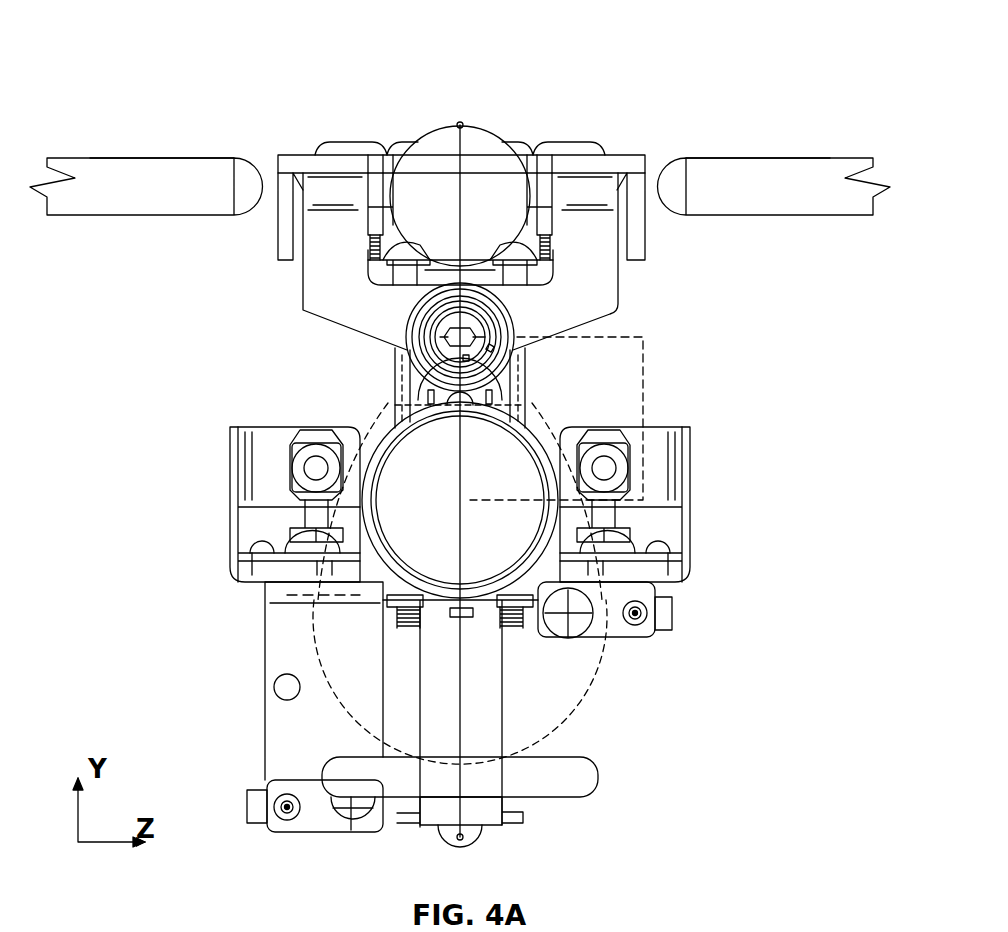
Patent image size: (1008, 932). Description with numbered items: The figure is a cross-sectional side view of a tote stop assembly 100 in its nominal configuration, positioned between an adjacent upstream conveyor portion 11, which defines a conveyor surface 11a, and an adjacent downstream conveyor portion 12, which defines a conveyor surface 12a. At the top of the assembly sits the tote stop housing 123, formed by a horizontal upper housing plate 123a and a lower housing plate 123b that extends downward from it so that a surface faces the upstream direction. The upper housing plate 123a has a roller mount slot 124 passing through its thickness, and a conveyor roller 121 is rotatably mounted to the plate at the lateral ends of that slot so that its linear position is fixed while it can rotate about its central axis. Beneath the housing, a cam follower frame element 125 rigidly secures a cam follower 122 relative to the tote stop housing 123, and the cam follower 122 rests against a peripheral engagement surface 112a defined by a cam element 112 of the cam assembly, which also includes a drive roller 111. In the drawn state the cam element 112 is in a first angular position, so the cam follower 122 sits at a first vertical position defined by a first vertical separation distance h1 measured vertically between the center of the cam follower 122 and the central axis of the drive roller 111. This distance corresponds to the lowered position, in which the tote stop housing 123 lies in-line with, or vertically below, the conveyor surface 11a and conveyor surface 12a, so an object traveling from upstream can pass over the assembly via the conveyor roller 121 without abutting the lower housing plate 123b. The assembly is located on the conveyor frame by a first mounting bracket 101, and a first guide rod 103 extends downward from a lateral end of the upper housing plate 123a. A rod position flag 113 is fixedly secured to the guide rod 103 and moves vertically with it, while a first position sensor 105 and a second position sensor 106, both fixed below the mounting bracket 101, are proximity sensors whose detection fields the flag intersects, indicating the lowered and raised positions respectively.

The tote stop assembly 100 is at (430, 92).
The upstream conveyor portion 11 is at (110, 173).
The conveyor surface 11a is at (140, 158).
The downstream conveyor portion 12 is at (810, 173).
The conveyor surface 12a is at (778, 158).
The conveyor roller 121 is at (487, 155).
The cam follower 122 is at (406, 333).
The tote stop housing 123 is at (297, 156).
The upper housing plate 123a is at (625, 155).
The lower housing plate 123b is at (288, 215).
The roller mount slot 124 is at (375, 166).
The cam follower frame element 125 is at (325, 270).
The peripheral engagement surface 112a is at (400, 405).
The drive roller 111 is at (420, 490).
The first vertical separation distance h1 is at (564, 418).
The first mounting bracket 101 is at (288, 565).
The first guide rod 103 is at (485, 805).
The first position sensor 105 is at (315, 812).
The second position sensor 106 is at (665, 612).
The cam element 112 is at (570, 680).
The rod position flag 113 is at (580, 770).